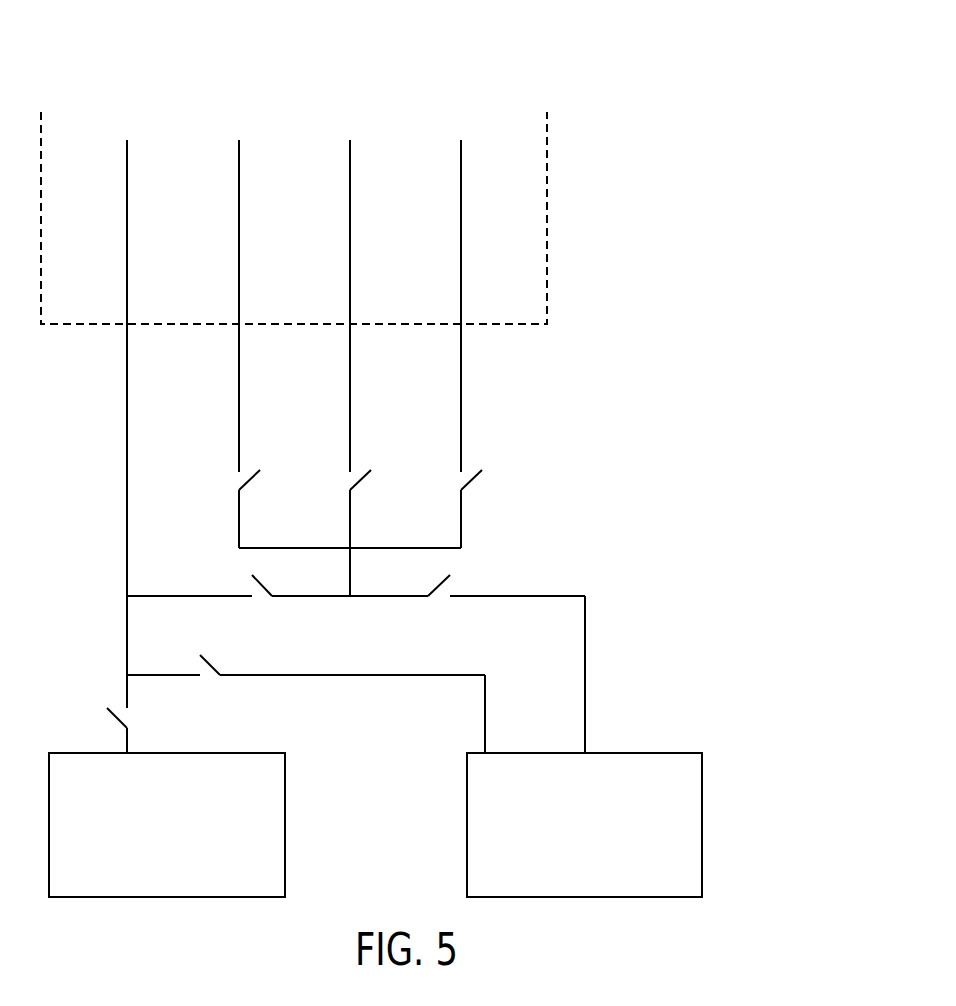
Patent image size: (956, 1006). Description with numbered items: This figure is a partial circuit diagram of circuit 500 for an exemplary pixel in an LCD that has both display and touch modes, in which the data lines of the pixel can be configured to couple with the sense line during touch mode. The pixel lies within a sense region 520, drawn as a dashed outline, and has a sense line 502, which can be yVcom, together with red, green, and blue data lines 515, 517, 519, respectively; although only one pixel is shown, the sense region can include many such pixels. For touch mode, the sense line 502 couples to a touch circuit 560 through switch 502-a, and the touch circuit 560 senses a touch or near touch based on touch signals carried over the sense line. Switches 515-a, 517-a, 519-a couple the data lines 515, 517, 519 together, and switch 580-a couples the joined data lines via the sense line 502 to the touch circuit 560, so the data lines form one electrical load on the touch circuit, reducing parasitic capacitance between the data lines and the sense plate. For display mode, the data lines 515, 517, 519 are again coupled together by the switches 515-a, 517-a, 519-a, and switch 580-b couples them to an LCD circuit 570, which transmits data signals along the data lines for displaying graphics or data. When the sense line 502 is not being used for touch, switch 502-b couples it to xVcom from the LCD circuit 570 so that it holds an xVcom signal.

The circuit 500 is at (553, 72).
The sense line 502 is at (127, 172).
The red data line 515 is at (239, 172).
The green data line 517 is at (350, 172).
The blue data line 519 is at (461, 172).
The sense region 520 is at (547, 218).
The switch 515-a is at (248, 482).
The switch 517-a is at (359, 482).
The switch 519-a is at (470, 482).
The switch 580-a is at (260, 600).
The switch 580-b is at (437, 600).
The switch 502-a is at (117, 716).
The switch 502-b is at (208, 678).
The touch circuit 560 is at (285, 826).
The LCD circuit 570 is at (702, 826).